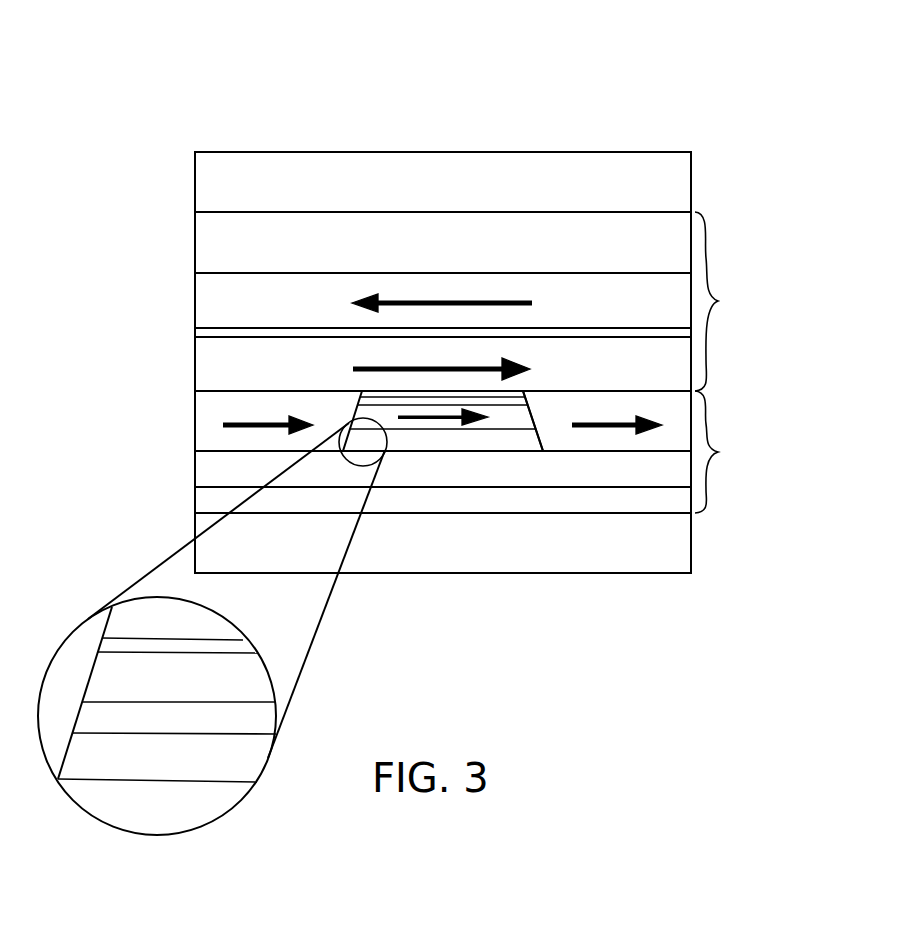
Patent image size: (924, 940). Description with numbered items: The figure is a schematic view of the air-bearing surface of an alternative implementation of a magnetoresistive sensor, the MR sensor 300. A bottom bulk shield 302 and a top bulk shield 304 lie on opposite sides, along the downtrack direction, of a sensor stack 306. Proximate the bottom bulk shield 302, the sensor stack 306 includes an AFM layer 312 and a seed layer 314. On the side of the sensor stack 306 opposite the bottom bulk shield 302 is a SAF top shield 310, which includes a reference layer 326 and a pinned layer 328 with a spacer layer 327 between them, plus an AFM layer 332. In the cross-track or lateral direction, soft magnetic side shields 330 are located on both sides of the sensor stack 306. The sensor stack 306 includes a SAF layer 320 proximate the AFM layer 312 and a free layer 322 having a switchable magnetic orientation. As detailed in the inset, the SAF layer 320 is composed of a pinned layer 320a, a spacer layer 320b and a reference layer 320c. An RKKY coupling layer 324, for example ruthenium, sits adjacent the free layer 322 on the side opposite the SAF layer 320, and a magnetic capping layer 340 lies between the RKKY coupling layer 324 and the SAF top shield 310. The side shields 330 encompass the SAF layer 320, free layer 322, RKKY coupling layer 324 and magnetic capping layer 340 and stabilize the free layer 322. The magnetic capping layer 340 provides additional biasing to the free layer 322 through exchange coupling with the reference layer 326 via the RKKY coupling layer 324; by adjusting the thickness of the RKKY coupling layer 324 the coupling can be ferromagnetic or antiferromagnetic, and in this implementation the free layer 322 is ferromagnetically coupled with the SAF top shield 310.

The MR sensor 300 is at (207, 78).
The bottom bulk shield 302 is at (588, 573).
The top bulk shield 304 is at (195, 183).
The sensor stack 306 is at (728, 452).
The SAF top shield 310 is at (729, 301).
The AFM layer 312 is at (195, 470).
The seed layer 314 is at (195, 505).
The SAF layer 320 is at (393, 452).
The pinned layer 320a is at (181, 767).
The spacer layer 320b is at (181, 731).
The reference layer 320c is at (181, 691).
The free layer 322 is at (455, 429).
The RKKY coupling layer 324 is at (515, 405).
The reference layer 326 is at (195, 370).
The spacer layer 327 is at (195, 332).
The pinned layer 328 is at (195, 300).
The side shields 330 is at (195, 423).
The AFM layer 332 is at (195, 245).
The magnetic capping layer 340 is at (362, 391).